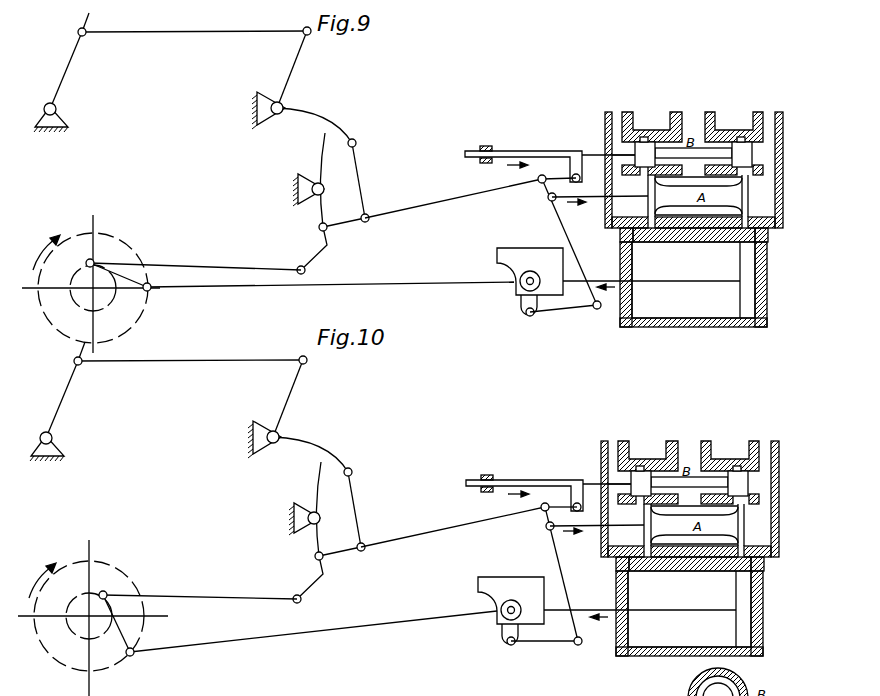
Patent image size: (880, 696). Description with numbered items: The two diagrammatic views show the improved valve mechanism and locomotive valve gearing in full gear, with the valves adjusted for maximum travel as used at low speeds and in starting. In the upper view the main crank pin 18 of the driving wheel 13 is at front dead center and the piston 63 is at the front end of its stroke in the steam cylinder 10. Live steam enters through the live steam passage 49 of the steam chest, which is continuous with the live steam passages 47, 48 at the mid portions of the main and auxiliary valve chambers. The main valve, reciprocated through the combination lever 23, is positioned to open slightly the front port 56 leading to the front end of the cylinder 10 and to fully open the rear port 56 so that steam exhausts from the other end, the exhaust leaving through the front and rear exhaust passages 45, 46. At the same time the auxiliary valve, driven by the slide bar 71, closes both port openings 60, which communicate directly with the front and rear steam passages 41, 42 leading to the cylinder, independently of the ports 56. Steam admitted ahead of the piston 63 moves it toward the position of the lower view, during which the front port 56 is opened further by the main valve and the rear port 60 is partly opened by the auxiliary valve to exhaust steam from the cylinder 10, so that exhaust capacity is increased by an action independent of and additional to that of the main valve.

In FIG. 9, the steam cylinder 10 is at (764, 300).
In FIG. 10, the steam cylinder 10 is at (703, 613).
In FIG. 9, the driving wheel 13 is at (51, 323).
In FIG. 10, the driving wheel 13 is at (56, 661).
In FIG. 9, the main crank pin 18 is at (148, 291).
In FIG. 10, the main crank pin 18 is at (130, 657).
In FIG. 9, the combination lever 23 is at (593, 242).
In FIG. 10, the combination lever 23 is at (592, 574).
In FIG. 9, the front steam passage 41 is at (769, 237).
In FIG. 10, the front steam passage 41 is at (772, 565).
In FIG. 9, the rear steam passage 42 is at (621, 236).
In FIG. 10, the rear steam passage 42 is at (612, 567).
In FIG. 9, the front exhaust passage 45 is at (769, 153).
In FIG. 10, the front exhaust passage 45 is at (783, 499).
In FIG. 9, the rear exhaust passage 46 is at (609, 128).
In FIG. 10, the rear exhaust passage 46 is at (594, 499).
In FIG. 9, the live steam passage 47 is at (693, 229).
In FIG. 10, the live steam passage 47 is at (689, 558).
In FIG. 9, the live steam passage 48 is at (692, 172).
In FIG. 10, the live steam passage 48 is at (688, 501).
In FIG. 9, the live steam passage 49 is at (691, 114).
In FIG. 10, the live steam passage 49 is at (688, 443).
In FIG. 9, the ports 56 is at (646, 176).
In FIG. 10, the ports 56 is at (710, 525).
In FIG. 9, the port openings 60 is at (682, 152).
In FIG. 10, the port openings 60 is at (678, 481).
In FIG. 9, the piston 63 is at (747, 319).
In FIG. 10, the piston 63 is at (736, 625).
In FIG. 9, the slide bar 71 is at (541, 151).
In FIG. 10, the slide bar 71 is at (549, 484).